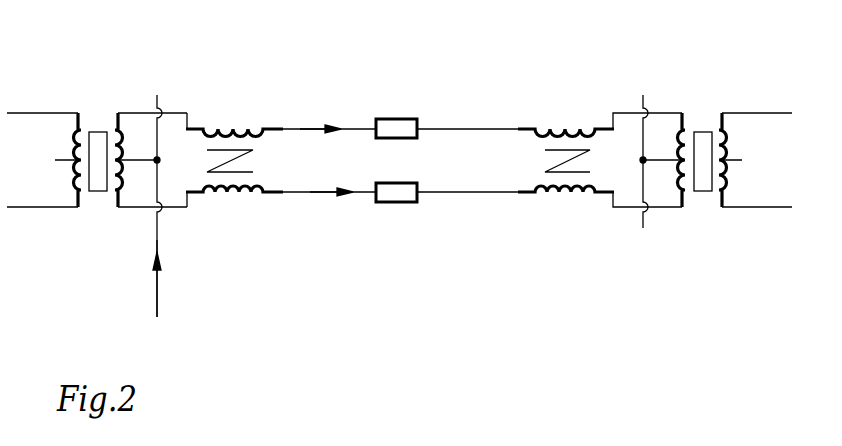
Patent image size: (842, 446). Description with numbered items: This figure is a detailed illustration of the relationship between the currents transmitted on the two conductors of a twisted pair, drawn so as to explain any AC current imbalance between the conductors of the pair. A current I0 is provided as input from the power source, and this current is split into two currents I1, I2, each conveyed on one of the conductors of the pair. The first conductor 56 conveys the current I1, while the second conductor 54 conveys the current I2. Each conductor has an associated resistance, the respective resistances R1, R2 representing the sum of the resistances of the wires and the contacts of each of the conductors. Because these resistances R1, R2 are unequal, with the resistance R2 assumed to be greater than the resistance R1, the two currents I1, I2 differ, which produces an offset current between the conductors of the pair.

The first conductor 56 is at (400, 79).
The second conductor 54 is at (400, 235).
The resistance of the first conductor R1 is at (396, 116).
The resistance of the second conductor R2 is at (396, 210).
The input current I0 is at (166, 278).
The first conductor current I1 is at (320, 112).
The second conductor current I2 is at (331, 205).